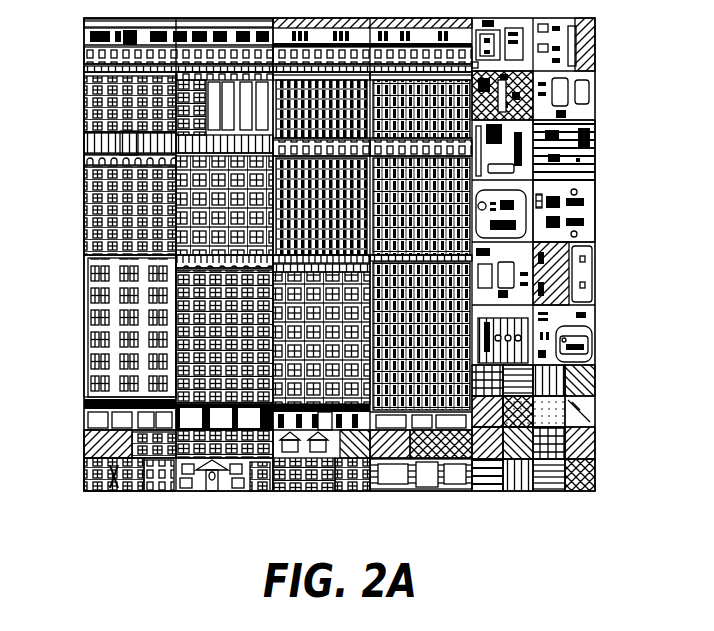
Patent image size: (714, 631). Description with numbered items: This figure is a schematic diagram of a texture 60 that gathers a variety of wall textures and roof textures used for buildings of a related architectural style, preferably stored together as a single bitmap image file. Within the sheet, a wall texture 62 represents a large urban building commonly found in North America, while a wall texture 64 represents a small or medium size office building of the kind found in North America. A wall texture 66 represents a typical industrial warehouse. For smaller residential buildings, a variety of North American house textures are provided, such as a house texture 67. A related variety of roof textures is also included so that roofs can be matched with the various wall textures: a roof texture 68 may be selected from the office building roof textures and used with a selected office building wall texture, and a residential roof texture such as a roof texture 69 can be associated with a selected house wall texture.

The texture 60 is at (129, 516).
The wall texture 62 is at (84, 316).
The wall texture 64 is at (84, 183).
The wall texture 66 is at (84, 40).
The house texture 67 is at (84, 462).
The roof texture 68 is at (525, 194).
The roof texture 69 is at (597, 438).